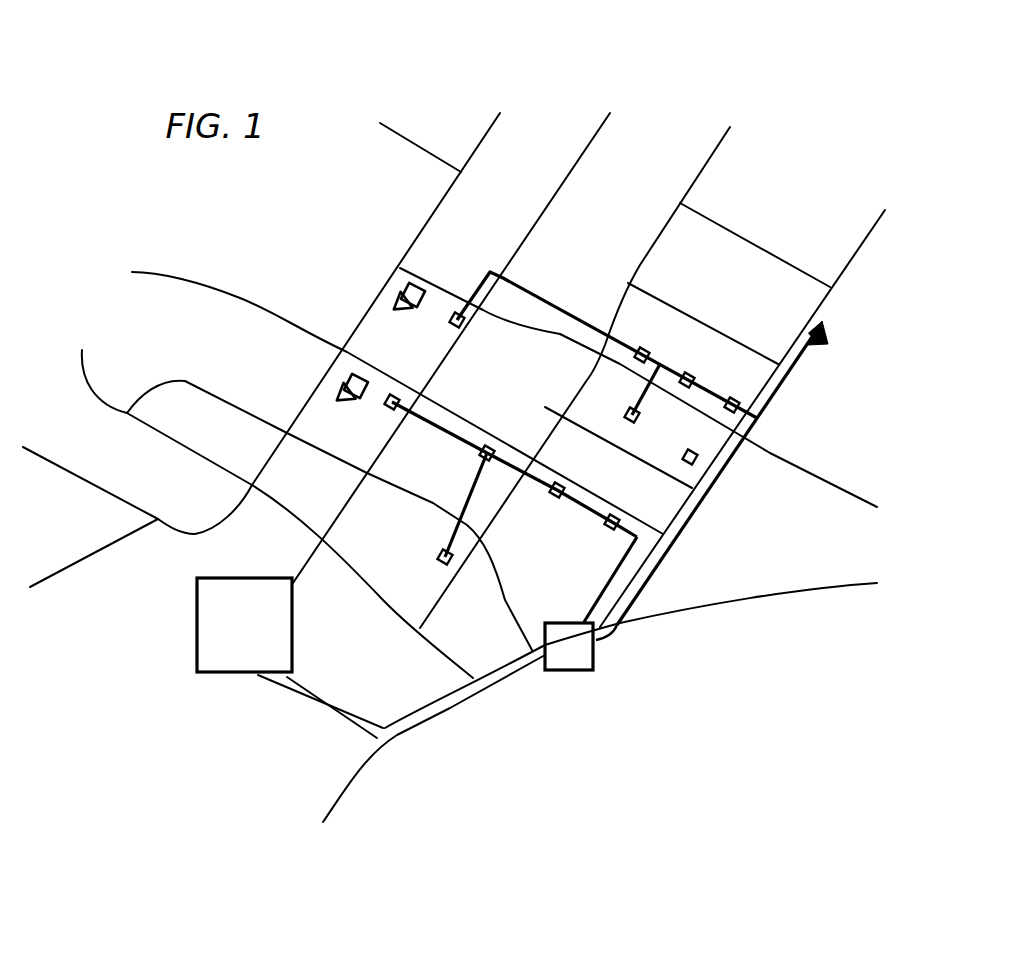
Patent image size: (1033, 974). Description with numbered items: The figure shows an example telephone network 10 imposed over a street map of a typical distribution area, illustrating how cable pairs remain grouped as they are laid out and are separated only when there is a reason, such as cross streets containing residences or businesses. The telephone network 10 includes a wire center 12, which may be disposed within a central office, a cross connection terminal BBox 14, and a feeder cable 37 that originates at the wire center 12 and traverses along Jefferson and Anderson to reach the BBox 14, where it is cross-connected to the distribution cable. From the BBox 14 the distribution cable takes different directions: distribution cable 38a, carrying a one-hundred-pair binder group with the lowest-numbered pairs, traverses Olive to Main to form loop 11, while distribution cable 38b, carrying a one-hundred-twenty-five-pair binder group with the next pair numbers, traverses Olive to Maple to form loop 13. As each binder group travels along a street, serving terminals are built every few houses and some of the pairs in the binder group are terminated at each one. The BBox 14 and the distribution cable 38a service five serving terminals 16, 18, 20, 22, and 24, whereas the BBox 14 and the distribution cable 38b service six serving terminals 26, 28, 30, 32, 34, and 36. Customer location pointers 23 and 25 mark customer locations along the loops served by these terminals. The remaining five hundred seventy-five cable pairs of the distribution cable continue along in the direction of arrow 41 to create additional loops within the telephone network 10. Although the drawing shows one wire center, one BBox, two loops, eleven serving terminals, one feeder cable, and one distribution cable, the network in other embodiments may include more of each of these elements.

The telephone network 10 is at (726, 100).
The loop 11 is at (443, 432).
The wire center 12 is at (197, 625).
The loop 13 is at (545, 302).
The BBox 14 is at (594, 660).
The serving terminal 16 is at (603, 529).
The serving terminal 18 is at (553, 497).
The serving terminal 20 is at (480, 461).
The serving terminal 22 is at (388, 408).
The customer location pointer 23 is at (340, 392).
The serving terminal 24 is at (440, 552).
The customer location pointer 25 is at (410, 318).
The serving terminal 26 is at (697, 455).
The serving terminal 28 is at (733, 397).
The serving terminal 30 is at (688, 372).
The serving terminal 32 is at (644, 346).
The serving terminal 34 is at (637, 425).
The serving terminal 36 is at (450, 313).
The feeder cable 37 is at (470, 687).
The distribution cable 38a is at (601, 588).
The distribution cable 38b is at (693, 525).
The arrow 41 is at (803, 355).